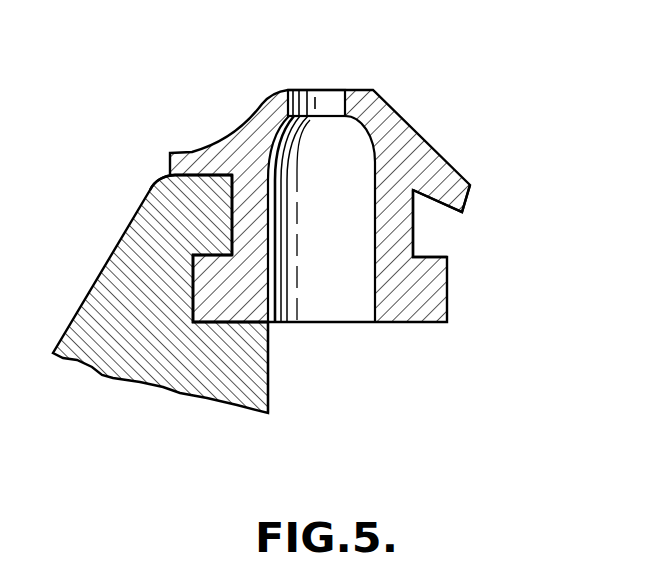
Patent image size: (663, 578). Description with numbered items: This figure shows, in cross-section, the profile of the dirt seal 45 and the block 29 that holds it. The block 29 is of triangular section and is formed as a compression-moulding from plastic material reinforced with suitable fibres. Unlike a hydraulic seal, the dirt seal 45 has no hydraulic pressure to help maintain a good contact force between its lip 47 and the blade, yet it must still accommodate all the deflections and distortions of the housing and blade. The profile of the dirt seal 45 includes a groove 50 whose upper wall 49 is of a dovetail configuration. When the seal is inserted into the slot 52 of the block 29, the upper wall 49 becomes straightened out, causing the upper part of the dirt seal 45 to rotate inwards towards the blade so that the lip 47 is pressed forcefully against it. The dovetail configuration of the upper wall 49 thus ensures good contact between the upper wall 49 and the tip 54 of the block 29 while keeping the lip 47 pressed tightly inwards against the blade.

The block 29 is at (158, 377).
The dirt seal 45 is at (335, 312).
The lip 47 is at (335, 90).
The upper wall 49 is at (434, 200).
The groove 50 is at (437, 237).
The slot 52 is at (192, 273).
The tip 54 is at (193, 176).